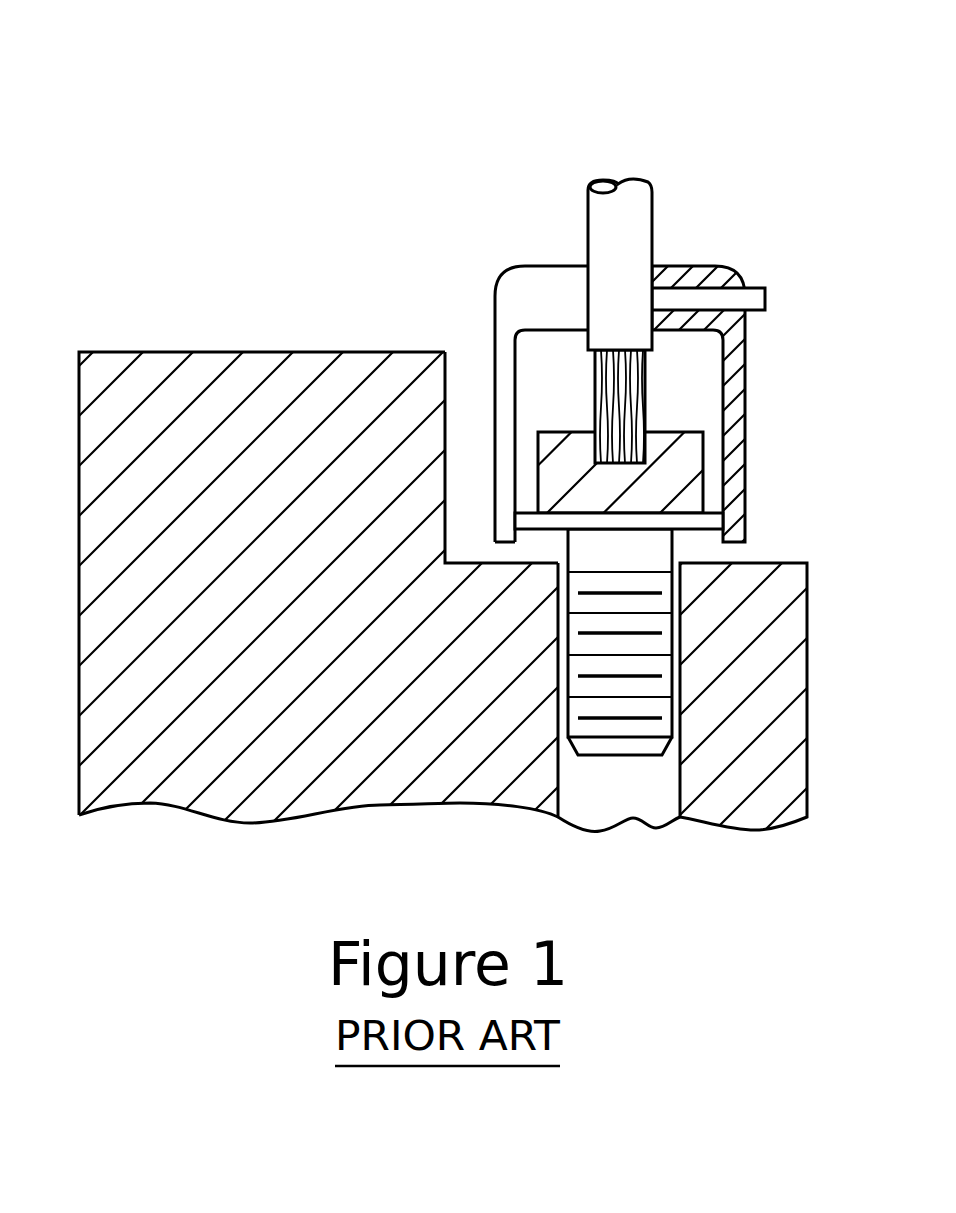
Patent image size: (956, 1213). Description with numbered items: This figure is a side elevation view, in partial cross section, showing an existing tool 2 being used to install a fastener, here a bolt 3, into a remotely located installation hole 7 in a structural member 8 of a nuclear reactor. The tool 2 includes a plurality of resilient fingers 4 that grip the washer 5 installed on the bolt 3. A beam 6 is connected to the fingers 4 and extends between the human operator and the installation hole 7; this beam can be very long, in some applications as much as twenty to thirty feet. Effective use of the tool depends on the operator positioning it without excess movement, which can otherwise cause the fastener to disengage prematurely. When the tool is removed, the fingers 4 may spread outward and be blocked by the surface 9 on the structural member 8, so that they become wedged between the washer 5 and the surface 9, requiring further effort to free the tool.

The existing tool 2 is at (657, 377).
The bolt 3 is at (673, 550).
The resilient fingers 4 is at (745, 358).
The washer 5 is at (705, 511).
The beam 6 is at (648, 212).
The installation hole 7 is at (620, 740).
The structural member 8 is at (478, 570).
The surface 9 is at (448, 377).